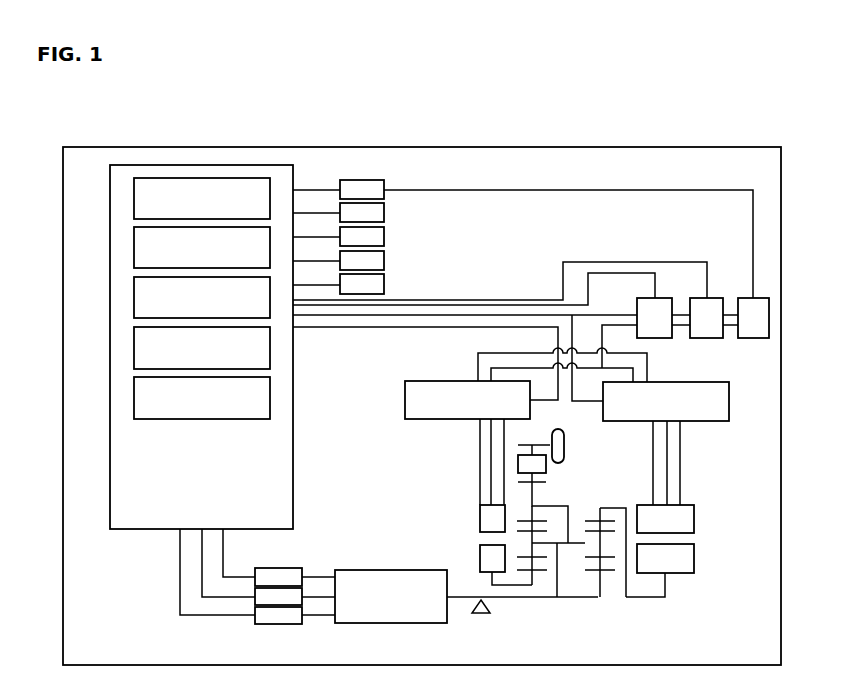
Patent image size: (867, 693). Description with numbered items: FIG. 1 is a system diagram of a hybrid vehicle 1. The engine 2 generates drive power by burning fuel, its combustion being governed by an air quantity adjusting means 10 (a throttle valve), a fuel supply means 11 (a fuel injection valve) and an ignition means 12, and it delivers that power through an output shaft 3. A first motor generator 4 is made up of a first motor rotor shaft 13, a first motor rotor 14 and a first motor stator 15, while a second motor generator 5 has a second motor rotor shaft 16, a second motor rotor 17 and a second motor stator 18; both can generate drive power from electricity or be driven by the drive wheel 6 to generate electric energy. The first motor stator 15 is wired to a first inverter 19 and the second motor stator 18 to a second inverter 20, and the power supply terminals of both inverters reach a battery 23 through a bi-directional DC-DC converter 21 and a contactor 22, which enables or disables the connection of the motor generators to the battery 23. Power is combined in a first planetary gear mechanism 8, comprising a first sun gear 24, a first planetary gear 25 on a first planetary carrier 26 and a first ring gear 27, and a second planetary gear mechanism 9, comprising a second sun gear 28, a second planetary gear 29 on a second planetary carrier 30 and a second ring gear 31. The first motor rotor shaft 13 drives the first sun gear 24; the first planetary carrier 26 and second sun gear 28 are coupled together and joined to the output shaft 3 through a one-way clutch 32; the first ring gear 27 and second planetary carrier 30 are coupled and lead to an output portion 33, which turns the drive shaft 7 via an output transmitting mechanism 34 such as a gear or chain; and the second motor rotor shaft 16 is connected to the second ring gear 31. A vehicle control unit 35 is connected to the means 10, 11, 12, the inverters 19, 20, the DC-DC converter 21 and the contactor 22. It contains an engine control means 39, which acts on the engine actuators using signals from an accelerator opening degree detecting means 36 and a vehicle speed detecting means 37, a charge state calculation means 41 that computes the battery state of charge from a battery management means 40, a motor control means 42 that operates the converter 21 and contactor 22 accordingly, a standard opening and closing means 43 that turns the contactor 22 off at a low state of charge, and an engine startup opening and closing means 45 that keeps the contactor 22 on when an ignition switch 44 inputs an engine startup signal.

The hybrid vehicle 1 is at (568, 146).
The engine 2 is at (357, 575).
The output shaft 3 is at (458, 599).
The first motor generator 4 is at (472, 502).
The second motor generator 5 is at (703, 506).
The drive wheel 6 is at (566, 445).
The drive shaft 7 is at (495, 443).
The first planetary gear mechanism 8 is at (537, 600).
The second planetary gear mechanism 9 is at (604, 592).
The air quantity adjusting means 10 is at (290, 577).
The fuel supply means 11 is at (270, 598).
The ignition means 12 is at (293, 617).
The first motor rotor shaft 13 is at (510, 587).
The first motor rotor 14 is at (479, 557).
The first motor stator 15 is at (479, 513).
The second motor rotor shaft 16 is at (651, 600).
The second motor rotor 17 is at (683, 568).
The second motor stator 18 is at (694, 518).
The first inverter 19 is at (437, 383).
The second inverter 20 is at (711, 385).
The DC-DC converter 21 is at (663, 304).
The contactor 22 is at (715, 304).
The battery 23 is at (754, 338).
The first sun gear 24 is at (541, 588).
The first planetary gear 25 is at (516, 531).
The first planetary carrier 26 is at (548, 520).
The first ring gear 27 is at (530, 504).
The second sun gear 28 is at (592, 573).
The second planetary gear 29 is at (612, 534).
The second planetary carrier 30 is at (575, 541).
The second ring gear 31 is at (605, 509).
The one-way clutch 32 is at (481, 614).
The output portion 33 is at (516, 464).
The output transmitting mechanism 34 is at (516, 446).
The vehicle control unit 35 is at (118, 531).
The accelerator opening degree detecting means 36 is at (385, 211).
The vehicle speed detecting means 37 is at (385, 237).
The engine control means 39 is at (138, 200).
The battery management means 40 is at (385, 181).
The charge state calculation means 41 is at (138, 249).
The motor control means 42 is at (138, 299).
The standard opening and closing means 43 is at (138, 349).
The ignition switch 44 is at (385, 285).
The engine startup opening and closing means 45 is at (138, 399).